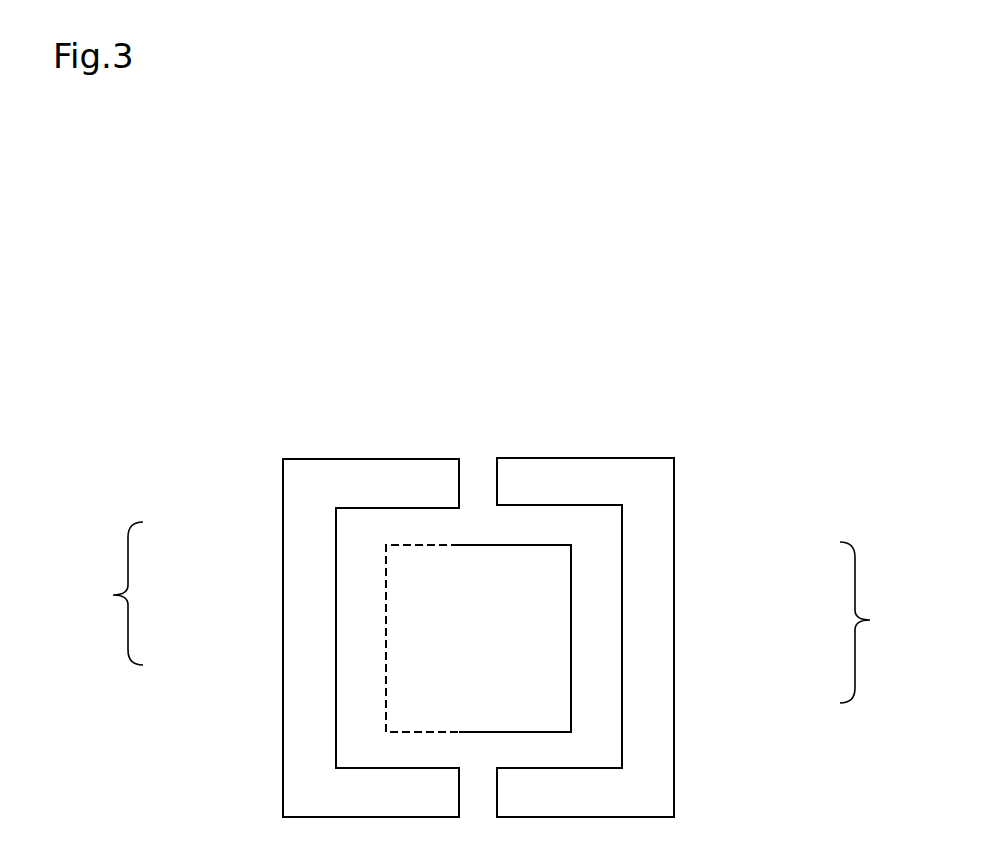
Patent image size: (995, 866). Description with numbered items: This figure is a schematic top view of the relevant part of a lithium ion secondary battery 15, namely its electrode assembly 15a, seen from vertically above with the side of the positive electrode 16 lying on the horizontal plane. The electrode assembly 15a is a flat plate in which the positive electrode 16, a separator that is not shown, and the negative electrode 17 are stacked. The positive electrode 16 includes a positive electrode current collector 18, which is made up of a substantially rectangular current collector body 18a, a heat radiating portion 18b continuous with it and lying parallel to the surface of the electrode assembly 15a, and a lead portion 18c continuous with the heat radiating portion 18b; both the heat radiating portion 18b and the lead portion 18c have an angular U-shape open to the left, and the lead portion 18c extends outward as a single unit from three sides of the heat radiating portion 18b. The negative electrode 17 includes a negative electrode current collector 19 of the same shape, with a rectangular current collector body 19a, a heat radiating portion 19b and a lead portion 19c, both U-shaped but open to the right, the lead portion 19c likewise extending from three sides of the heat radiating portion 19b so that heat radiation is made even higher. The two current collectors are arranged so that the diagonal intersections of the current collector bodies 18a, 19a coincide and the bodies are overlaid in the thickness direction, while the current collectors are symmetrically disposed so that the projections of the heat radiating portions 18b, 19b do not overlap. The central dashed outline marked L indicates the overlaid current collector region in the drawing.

The lithium ion secondary battery 15 is at (189, 169).
The electrode assembly 15a is at (578, 424).
The positive electrode 16 is at (796, 529).
The negative electrode 17 is at (198, 491).
The positive electrode current collector 18 is at (735, 637).
The current collector body 18a is at (555, 713).
The heat radiating portion 18b is at (640, 643).
The lead portion 18c is at (640, 590).
The negative electrode current collector 19 is at (230, 638).
The current collector body 19a is at (397, 573).
The heat radiating portion 19b is at (363, 615).
The lead portion 19c is at (323, 669).
The length dimension region L is at (388, 668).